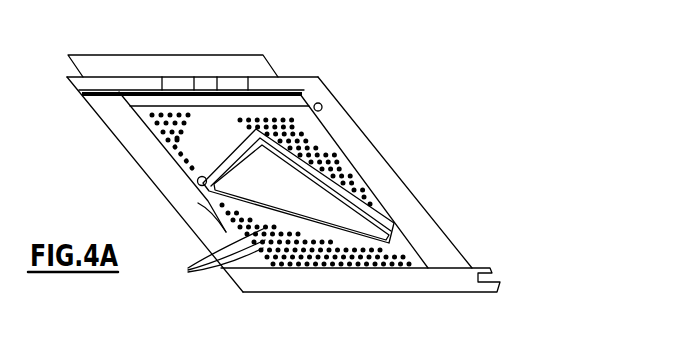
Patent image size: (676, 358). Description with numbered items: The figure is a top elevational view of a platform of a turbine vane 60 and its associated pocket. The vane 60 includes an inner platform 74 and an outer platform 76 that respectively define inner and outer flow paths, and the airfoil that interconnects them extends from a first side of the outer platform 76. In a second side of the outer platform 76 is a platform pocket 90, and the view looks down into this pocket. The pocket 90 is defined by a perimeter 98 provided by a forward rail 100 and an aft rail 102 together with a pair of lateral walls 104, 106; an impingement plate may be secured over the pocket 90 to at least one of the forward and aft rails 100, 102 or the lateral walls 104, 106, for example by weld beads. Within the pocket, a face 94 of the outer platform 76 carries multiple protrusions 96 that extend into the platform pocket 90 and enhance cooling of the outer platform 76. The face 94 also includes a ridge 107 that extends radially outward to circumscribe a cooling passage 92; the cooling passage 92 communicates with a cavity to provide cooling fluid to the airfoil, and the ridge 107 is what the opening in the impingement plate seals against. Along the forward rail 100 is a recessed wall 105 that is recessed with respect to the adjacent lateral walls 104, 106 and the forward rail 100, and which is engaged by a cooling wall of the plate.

The vane 60 is at (470, 156).
The inner platform 74 is at (212, 68).
The outer platform 76 is at (458, 239).
The platform pocket 90 is at (219, 137).
The cooling passage 92 is at (325, 152).
The face 94 is at (190, 140).
The protrusions 96 is at (188, 269).
The perimeter 98 is at (203, 203).
The forward rail 100 is at (313, 87).
The aft rail 102 is at (448, 283).
The lateral wall 104 is at (160, 172).
The recessed wall 105 is at (155, 102).
The lateral wall 106 is at (410, 217).
The ridge 107 is at (334, 193).